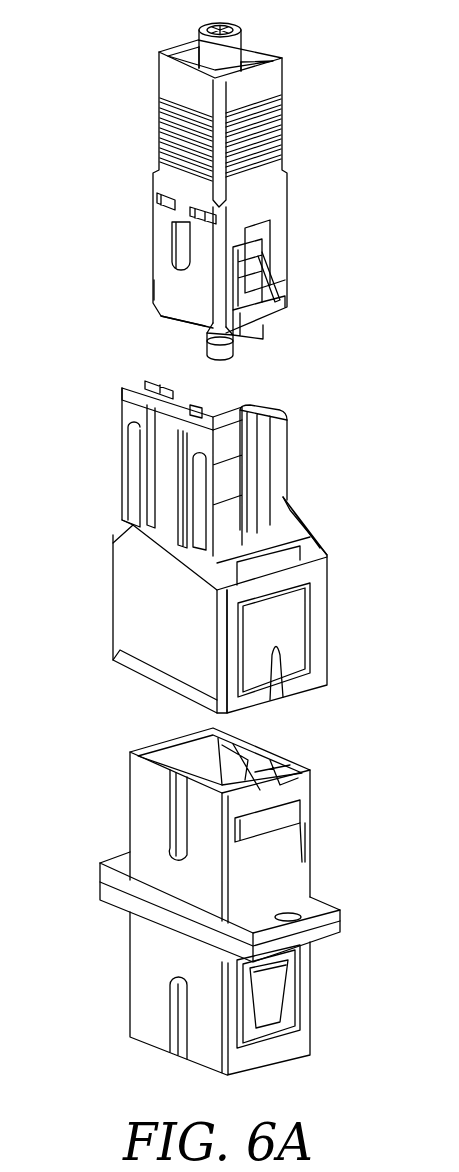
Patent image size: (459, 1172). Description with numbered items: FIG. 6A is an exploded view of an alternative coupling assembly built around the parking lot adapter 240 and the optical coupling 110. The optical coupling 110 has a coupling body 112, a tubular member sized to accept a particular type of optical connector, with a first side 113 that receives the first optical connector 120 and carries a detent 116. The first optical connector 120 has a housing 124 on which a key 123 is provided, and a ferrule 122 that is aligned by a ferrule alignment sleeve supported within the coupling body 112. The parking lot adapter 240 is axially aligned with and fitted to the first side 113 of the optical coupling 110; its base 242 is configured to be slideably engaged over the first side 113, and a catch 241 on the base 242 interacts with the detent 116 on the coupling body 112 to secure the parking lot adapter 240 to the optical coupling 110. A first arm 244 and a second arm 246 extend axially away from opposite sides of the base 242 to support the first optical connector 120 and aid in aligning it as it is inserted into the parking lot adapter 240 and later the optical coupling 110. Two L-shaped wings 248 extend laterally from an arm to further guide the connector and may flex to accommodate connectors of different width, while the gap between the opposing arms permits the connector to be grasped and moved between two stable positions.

The optical coupling 110 is at (314, 863).
The coupling body 112 is at (128, 839).
The first side 113 is at (143, 783).
The detent 116 is at (280, 836).
The first optical connector 120 is at (296, 98).
The ferrule 122 is at (233, 352).
The key 123 is at (174, 241).
The housing 124 is at (170, 292).
The parking lot adapter 240 is at (97, 603).
The catch 241 is at (290, 643).
The base 242 is at (323, 605).
The first arm 244 is at (145, 500).
The second arm 246 is at (280, 445).
The L-shaped wings 248 is at (203, 442).